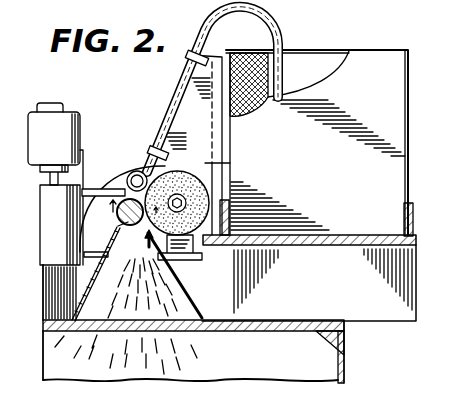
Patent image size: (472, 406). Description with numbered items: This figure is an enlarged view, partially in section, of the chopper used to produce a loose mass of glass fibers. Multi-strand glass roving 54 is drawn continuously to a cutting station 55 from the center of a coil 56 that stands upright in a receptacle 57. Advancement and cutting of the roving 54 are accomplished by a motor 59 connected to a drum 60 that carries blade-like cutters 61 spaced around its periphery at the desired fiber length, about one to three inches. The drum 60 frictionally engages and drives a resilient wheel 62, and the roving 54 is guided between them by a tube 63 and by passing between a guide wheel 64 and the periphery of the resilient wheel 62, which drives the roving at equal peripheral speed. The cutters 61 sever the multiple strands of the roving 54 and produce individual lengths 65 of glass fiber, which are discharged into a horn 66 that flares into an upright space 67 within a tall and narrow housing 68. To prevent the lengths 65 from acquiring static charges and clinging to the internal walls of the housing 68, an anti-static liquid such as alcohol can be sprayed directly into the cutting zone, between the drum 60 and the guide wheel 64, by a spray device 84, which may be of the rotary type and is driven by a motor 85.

The multi-strand glass roving 54 is at (283, 66).
The cutting station 55 is at (105, 164).
The coil 56 is at (257, 101).
The receptacle 57 is at (374, 73).
The motor 59 is at (117, 165).
The drum 60 is at (120, 228).
The blade-like cutters 61 is at (116, 212).
The resilient wheel 62 is at (206, 189).
The tube 63 is at (271, 14).
The guide wheel 64 is at (137, 170).
The individual lengths 65 is at (147, 240).
The horn 66 is at (184, 291).
The upright space 67 is at (309, 357).
The housing 68 is at (343, 364).
The spray device 84 is at (50, 229).
The motor 85 is at (67, 120).